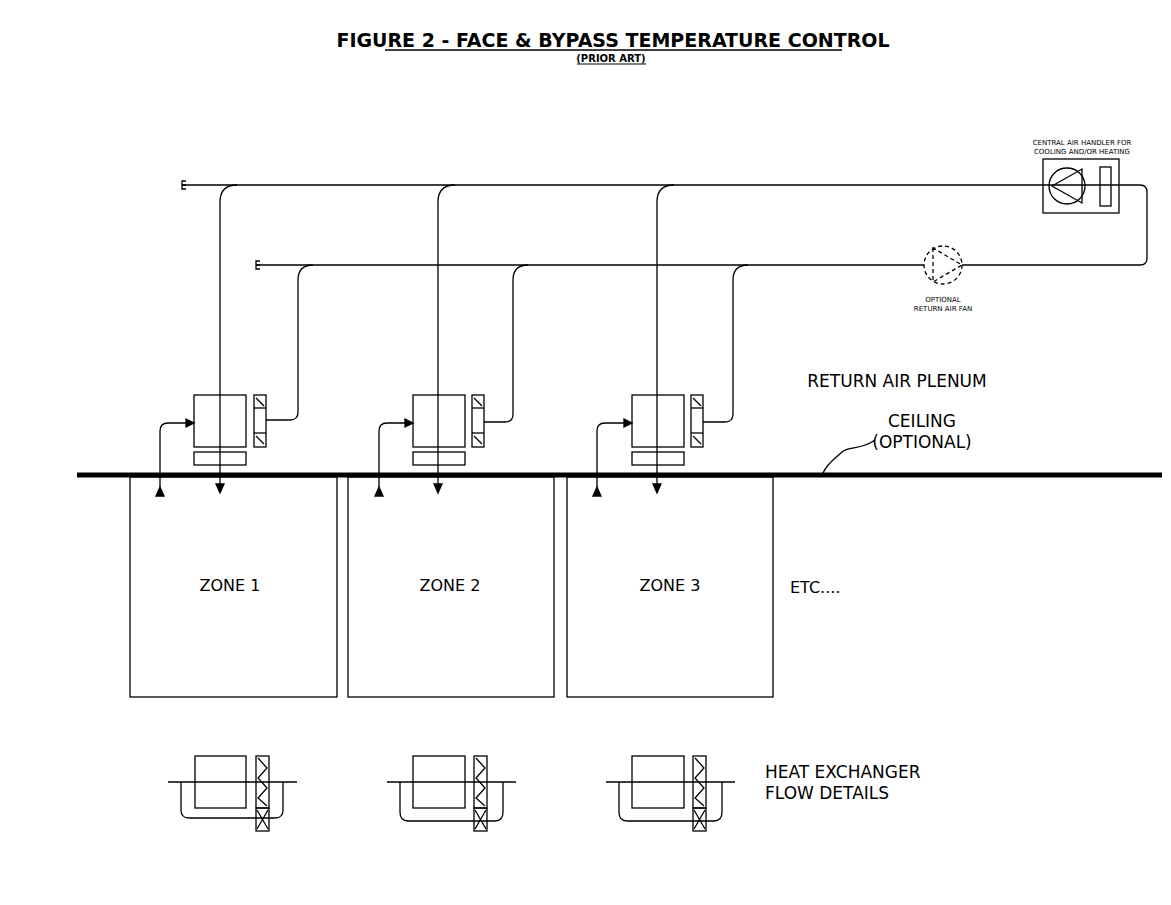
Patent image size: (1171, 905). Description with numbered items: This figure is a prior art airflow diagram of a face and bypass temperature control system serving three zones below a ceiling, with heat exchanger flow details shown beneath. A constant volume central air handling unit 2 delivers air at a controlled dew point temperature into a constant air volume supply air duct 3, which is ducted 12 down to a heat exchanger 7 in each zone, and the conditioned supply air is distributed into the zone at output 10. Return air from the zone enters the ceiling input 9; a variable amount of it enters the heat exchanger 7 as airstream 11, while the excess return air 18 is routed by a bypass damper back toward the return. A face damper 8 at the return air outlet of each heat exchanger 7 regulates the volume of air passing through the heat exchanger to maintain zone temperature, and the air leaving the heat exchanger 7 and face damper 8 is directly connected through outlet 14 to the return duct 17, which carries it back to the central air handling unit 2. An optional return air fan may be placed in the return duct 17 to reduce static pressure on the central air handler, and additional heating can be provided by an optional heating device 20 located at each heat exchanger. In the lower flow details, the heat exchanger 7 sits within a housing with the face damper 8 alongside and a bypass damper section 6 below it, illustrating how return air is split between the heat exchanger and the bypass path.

The central air handling unit 2 is at (1106, 214).
The supply air duct 3 is at (688, 185).
The bypass damper section 6 is at (259, 831).
The heat exchanger 7 is at (246, 395).
The face damper 8 is at (262, 395).
The ceiling input 9 is at (160, 498).
The output 10 is at (220, 495).
The airstream 11 is at (174, 423).
The duct 12 is at (220, 248).
The outlet 14 is at (298, 352).
The return duct 17 is at (792, 265).
The excess return air 18 is at (192, 822).
The heating device 20 is at (246, 458).